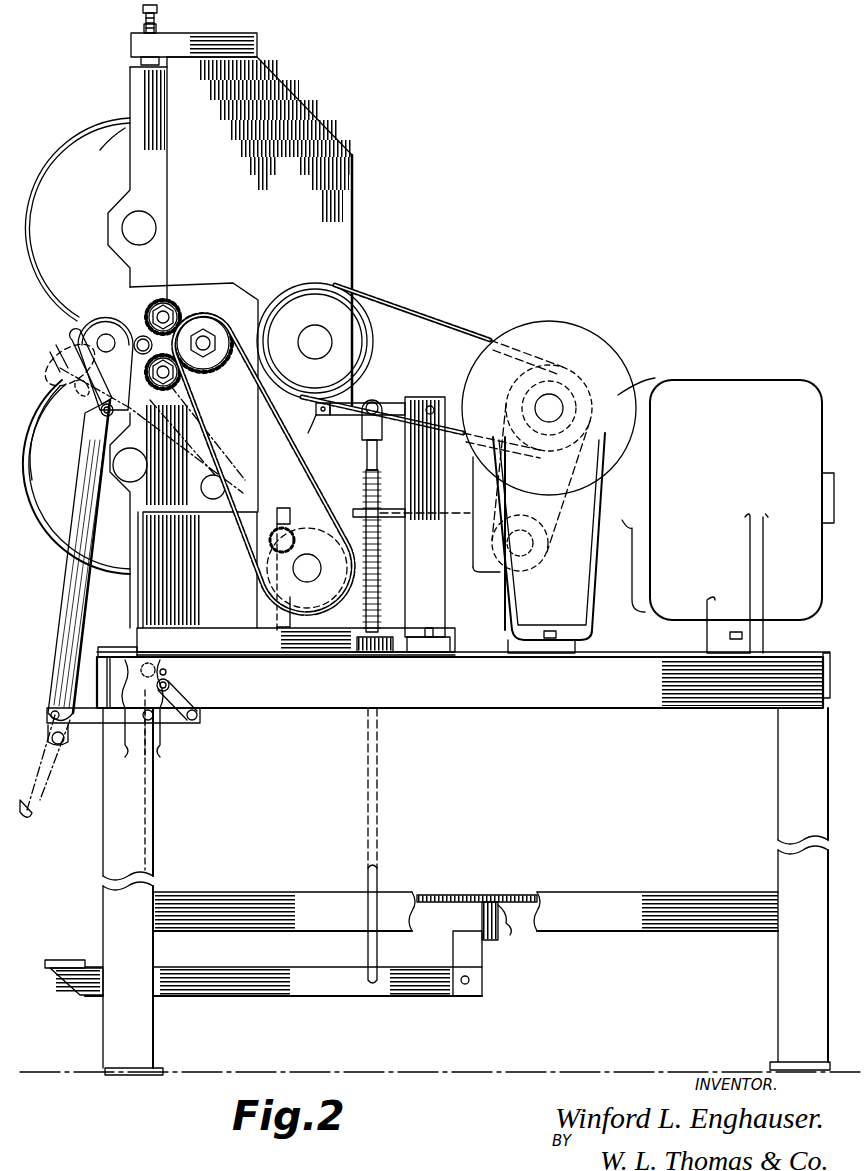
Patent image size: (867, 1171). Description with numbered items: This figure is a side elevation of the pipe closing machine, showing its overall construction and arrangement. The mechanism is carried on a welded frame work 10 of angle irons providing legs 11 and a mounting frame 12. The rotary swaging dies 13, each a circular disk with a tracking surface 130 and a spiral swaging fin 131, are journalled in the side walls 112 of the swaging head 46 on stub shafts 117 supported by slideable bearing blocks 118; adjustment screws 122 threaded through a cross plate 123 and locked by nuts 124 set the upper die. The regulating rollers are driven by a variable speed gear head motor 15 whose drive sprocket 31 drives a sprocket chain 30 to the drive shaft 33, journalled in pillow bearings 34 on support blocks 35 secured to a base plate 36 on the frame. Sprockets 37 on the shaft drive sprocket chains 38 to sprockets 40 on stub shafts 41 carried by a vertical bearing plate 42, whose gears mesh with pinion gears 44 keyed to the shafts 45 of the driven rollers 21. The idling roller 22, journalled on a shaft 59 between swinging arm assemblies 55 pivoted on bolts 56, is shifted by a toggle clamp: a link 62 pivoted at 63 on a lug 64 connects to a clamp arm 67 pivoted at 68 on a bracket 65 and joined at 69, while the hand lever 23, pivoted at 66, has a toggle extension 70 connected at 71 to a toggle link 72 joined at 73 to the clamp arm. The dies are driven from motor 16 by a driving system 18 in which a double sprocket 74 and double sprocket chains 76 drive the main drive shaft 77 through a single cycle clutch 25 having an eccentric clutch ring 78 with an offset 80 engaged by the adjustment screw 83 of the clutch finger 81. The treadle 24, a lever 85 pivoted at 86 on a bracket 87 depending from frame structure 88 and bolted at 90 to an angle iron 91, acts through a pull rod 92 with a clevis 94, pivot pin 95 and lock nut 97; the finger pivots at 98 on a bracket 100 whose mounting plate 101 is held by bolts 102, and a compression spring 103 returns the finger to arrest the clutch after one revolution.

The frame work 10 is at (102, 1015).
The legs 11 is at (140, 1034).
The mounting frame 12 is at (628, 700).
The rotary swaging dies 13 is at (78, 136).
The variable speed gear head motor 15 is at (500, 602).
The gear head motor 16 is at (724, 382).
The driving system 18 is at (468, 312).
The driven rollers 21 is at (143, 302).
The idling roller 22 is at (106, 322).
The hand lever 23 is at (46, 805).
The treadle 24 is at (58, 960).
The single cycle clutch 25 is at (322, 286).
The sprocket chain 30 is at (388, 508).
The drive sprocket 31 is at (492, 545).
The drive shaft 33 is at (304, 568).
The pillow bearings 34 is at (283, 508).
The support blocks 35 is at (232, 606).
The base plate 36 is at (330, 650).
The sprockets 37 is at (280, 540).
The sprocket chain 38 is at (240, 544).
The sprocket 40 is at (222, 368).
The stub shaft 41 is at (210, 330).
The vertical bearing plate 42 is at (240, 451).
The pinion gears 44 is at (192, 300).
The shafts 45 is at (162, 299).
The swaging head 46 is at (335, 181).
The swinging arm assemblies 55 is at (98, 332).
The bolts 56 is at (214, 495).
The shaft 59 is at (104, 340).
The link 62 is at (78, 466).
The pivot 63 is at (100, 409).
The lug 64 is at (110, 392).
The bracket 65 is at (158, 664).
The pivot 66 is at (134, 656).
The clamp arm 67 is at (85, 708).
The pivot 68 is at (140, 745).
The connection 69 is at (53, 730).
The toggle extension 70 is at (168, 672).
The pivot 71 is at (200, 691).
The toggle link 72 is at (200, 715).
The connection 73 is at (194, 720).
The double sprocket 74 is at (522, 374).
The double sprocket chains 76 is at (438, 311).
The main drive shaft 77 is at (313, 338).
The eccentric clutch ring 78 is at (362, 335).
The offset 80 is at (315, 405).
The clutch finger 81 is at (394, 402).
The adjustment screw 83 is at (307, 429).
The lever 85 is at (315, 985).
The pivot 86 is at (470, 984).
The bracket 87 is at (470, 958).
The frame structure 88 is at (616, 905).
The bolts 90 is at (478, 898).
The angle iron 91 is at (535, 908).
The pull rod 92 is at (380, 820).
The clevis 94 is at (420, 408).
The pivot pin 95 is at (374, 400).
The lock nut 97 is at (365, 446).
The pivot 98 is at (436, 408).
The bracket 100 is at (470, 490).
The mounting plate 101 is at (440, 648).
The bolts 102 is at (426, 655).
The compression spring 103 is at (380, 534).
The side walls 112 is at (288, 104).
The stub shafts 117 is at (143, 226).
The bearing block 118 is at (140, 167).
The adjustment screws 122 is at (142, 10).
The cross plate 123 is at (244, 34).
The nuts 124 is at (160, 33).
The tracking surface 130 is at (44, 414).
The spiral swaging fin 131 is at (104, 122).